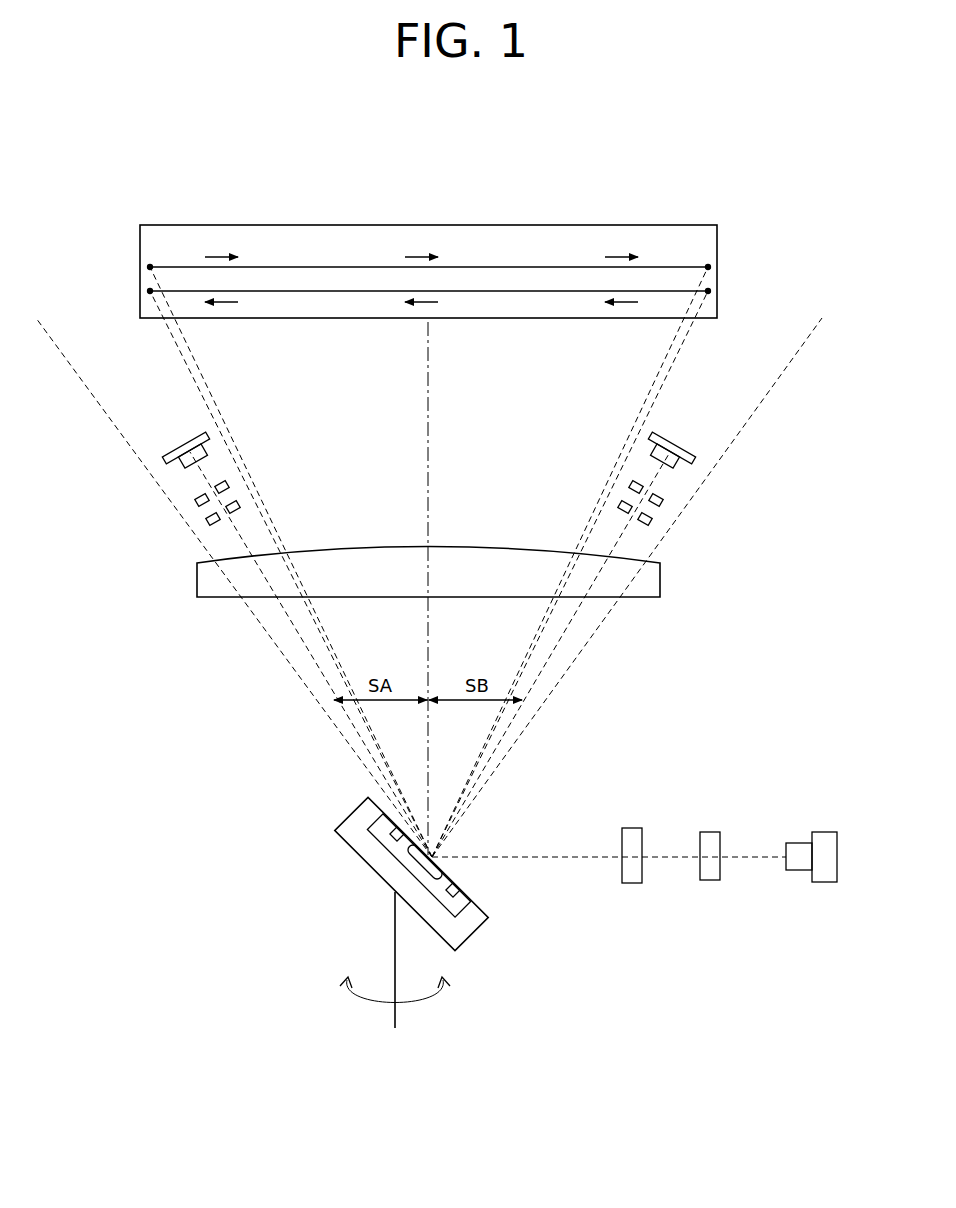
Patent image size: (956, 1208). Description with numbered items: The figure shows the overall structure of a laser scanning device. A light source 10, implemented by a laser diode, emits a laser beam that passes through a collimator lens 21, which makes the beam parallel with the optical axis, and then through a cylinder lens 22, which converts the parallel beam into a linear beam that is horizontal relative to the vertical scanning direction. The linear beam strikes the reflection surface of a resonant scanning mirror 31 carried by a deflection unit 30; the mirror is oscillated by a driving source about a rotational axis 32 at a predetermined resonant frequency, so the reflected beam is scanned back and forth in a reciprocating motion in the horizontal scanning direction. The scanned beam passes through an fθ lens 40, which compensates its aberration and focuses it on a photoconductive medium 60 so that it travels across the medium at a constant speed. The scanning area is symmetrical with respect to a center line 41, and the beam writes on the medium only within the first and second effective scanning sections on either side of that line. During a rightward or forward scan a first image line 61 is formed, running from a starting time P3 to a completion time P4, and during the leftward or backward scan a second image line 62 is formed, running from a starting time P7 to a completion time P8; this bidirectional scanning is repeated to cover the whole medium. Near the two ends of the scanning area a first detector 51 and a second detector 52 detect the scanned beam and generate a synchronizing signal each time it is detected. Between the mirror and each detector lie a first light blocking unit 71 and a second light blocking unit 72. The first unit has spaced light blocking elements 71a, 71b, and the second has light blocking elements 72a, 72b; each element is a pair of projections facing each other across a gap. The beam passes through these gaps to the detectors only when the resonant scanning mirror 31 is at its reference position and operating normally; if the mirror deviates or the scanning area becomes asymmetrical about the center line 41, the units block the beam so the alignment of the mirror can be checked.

The light source 10 is at (823, 882).
The collimator lens 21 is at (712, 880).
The cylinder lens 22 is at (633, 883).
The deflection unit 30 is at (407, 873).
The resonant scanning mirror 31 is at (447, 867).
The rotational axis 32 is at (395, 975).
The fθ lens 40 is at (197, 584).
The center line 41 is at (432, 456).
The first detector 51 is at (180, 453).
The second detector 52 is at (680, 453).
The photoconductive medium 60 is at (430, 225).
The first image line 61 is at (325, 267).
The second image line 62 is at (328, 291).
The first light blocking unit 71 is at (164, 509).
The light blocking element 71a is at (206, 521).
The light blocking element 71b is at (196, 500).
The second light blocking unit 72 is at (695, 509).
The light blocking element 72a is at (652, 521).
The light blocking element 72b is at (662, 500).
The starting time P3 is at (150, 267).
The completion time P4 is at (708, 267).
The starting time P7 is at (708, 291).
The completion time P8 is at (150, 291).